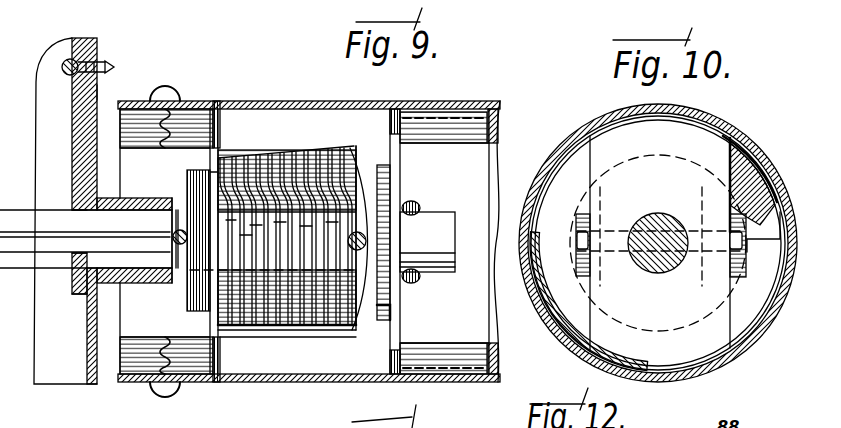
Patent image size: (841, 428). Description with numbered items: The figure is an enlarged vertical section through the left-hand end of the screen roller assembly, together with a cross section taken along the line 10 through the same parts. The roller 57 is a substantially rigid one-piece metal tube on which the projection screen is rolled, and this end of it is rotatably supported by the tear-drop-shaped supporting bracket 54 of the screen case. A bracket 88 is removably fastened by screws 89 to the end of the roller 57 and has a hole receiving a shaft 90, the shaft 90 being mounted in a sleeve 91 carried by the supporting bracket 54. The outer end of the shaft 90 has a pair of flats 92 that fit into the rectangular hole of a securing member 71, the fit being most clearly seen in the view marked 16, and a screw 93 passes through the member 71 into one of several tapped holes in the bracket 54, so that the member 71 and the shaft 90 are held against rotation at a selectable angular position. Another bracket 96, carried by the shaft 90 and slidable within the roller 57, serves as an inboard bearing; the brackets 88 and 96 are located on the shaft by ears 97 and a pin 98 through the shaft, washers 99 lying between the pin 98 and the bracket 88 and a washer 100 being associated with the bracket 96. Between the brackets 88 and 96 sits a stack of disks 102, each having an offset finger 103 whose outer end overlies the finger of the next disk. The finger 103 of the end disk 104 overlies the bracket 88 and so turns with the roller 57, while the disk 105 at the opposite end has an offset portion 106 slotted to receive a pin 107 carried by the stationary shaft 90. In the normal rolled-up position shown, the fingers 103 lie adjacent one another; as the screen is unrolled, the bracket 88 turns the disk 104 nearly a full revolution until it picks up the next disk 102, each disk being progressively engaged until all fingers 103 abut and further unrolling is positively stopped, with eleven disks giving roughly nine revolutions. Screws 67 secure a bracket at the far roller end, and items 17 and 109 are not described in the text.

In FIG. 9, the section line 10 is at (212, 100).
In FIG. 9, the figure reference (section line) 16 is at (148, 0).
In FIG. 10, the section line 17- 17 is at (665, 12).
In FIG. 9, the supporting bracket 54 is at (97, 92).
In FIG. 9, the roller 57 is at (408, 103).
In FIG. 10, the roller 57 is at (571, 136).
In FIG. 10, the screws 67 is at (636, 6).
In FIG. 9, the securing member 71 is at (75, 161).
In FIG. 9, the bracket 88 is at (236, 168).
In FIG. 10, the bracket 88 is at (597, 163).
In FIG. 9, the screws 89 is at (165, 98).
In FIG. 9, the shaft 90 is at (441, 217).
In FIG. 10, the shaft 90 is at (643, 213).
In FIG. 9, the sleeve 91 is at (153, 197).
In FIG. 9, the flats 92 is at (93, 231).
In FIG. 9, the screw 93 is at (64, 62).
In FIG. 9, the bracket 96 is at (345, 120).
In FIG. 9, the ears 97 is at (414, 203).
In FIG. 9, the pin 98 is at (179, 250).
In FIG. 9, the washers 99 is at (190, 303).
In FIG. 9, the washer 100 is at (385, 313).
In FIG. 9, the disks 102 is at (270, 330).
In FIG. 9, the offset finger 103 is at (270, 165).
In FIG. 10, the offset finger 103 is at (770, 208).
In FIG. 9, the end disk 104 is at (220, 330).
In FIG. 9, the disk 105 is at (343, 330).
In FIG. 9, the offset portion 106 is at (355, 205).
In FIG. 10, the offset portion 106 is at (606, 293).
In FIG. 9, the pin 107 is at (368, 246).
In FIG. 10, the pin 107 is at (663, 297).
In FIG. 10, the locking key 109 is at (733, 279).